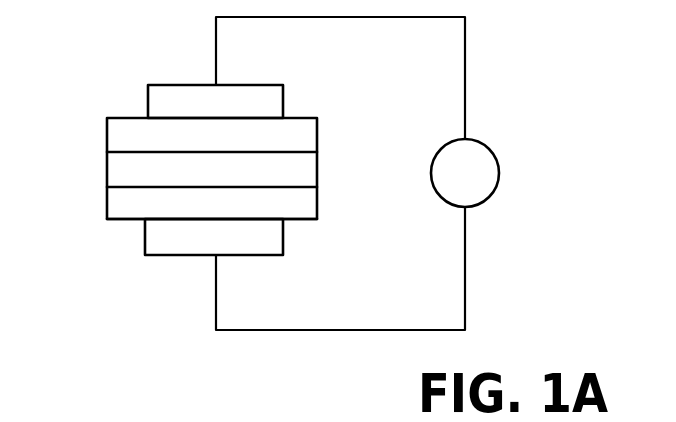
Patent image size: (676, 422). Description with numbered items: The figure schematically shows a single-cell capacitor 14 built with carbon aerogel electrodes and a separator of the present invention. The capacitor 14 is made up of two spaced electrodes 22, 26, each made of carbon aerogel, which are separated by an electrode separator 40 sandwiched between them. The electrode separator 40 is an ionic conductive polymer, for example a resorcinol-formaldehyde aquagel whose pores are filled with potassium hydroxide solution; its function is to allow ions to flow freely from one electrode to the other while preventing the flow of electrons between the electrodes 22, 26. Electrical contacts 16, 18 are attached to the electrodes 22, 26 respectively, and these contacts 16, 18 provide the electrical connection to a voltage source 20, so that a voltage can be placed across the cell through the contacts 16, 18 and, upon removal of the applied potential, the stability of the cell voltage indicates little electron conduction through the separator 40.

The capacitor 14 is at (82, 249).
The electrical contact 16 is at (283, 237).
The electrical contact 18 is at (283, 100).
The voltage source 20 is at (494, 152).
The electrode 22 is at (317, 203).
The electrode 26 is at (317, 140).
The electrode separator 40 is at (317, 172).